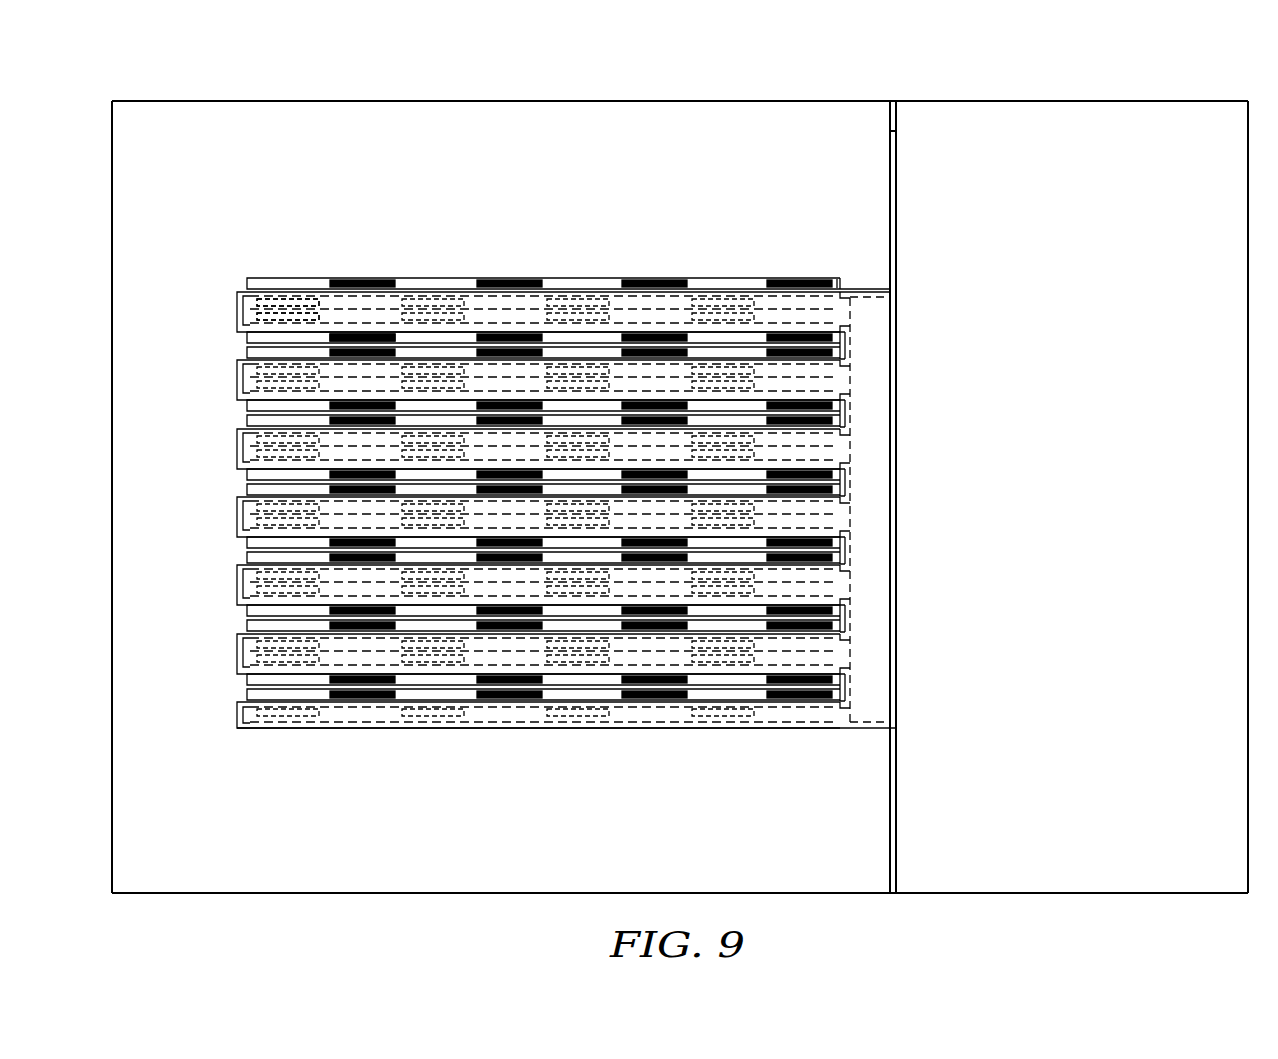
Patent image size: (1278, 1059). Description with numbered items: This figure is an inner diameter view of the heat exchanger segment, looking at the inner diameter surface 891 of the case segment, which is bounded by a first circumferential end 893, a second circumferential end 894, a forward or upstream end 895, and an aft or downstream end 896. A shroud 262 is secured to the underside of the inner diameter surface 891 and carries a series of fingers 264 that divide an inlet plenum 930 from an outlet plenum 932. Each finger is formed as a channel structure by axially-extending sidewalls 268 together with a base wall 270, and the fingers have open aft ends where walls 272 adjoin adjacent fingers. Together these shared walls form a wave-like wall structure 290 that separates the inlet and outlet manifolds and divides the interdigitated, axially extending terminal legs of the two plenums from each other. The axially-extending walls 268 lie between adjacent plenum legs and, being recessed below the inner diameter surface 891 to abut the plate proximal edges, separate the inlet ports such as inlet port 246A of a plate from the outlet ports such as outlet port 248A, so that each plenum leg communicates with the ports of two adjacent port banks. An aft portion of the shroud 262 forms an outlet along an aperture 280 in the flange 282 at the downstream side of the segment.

The inlet port 246A is at (340, 342).
The outlet port 248A is at (272, 322).
The shroud 262 is at (511, 778).
The fingers 264 is at (220, 722).
The sidewalls 268 is at (914, 590).
The base wall 270 is at (523, 750).
The walls adjoining adjacent fingers 272 is at (864, 686).
The aperture 280 is at (862, 724).
The flange 282 is at (912, 220).
The wave-like wall structure 290 is at (357, 702).
The inner diameter surface 891 is at (343, 163).
The first circumferential end 893 is at (600, 101).
The second circumferential end 894 is at (402, 893).
The forward/upstream end 895 is at (111, 150).
The aft/downstream end 896 is at (1248, 152).
The inlet plenum 930 is at (288, 258).
The outlet plenum 932 is at (855, 304).